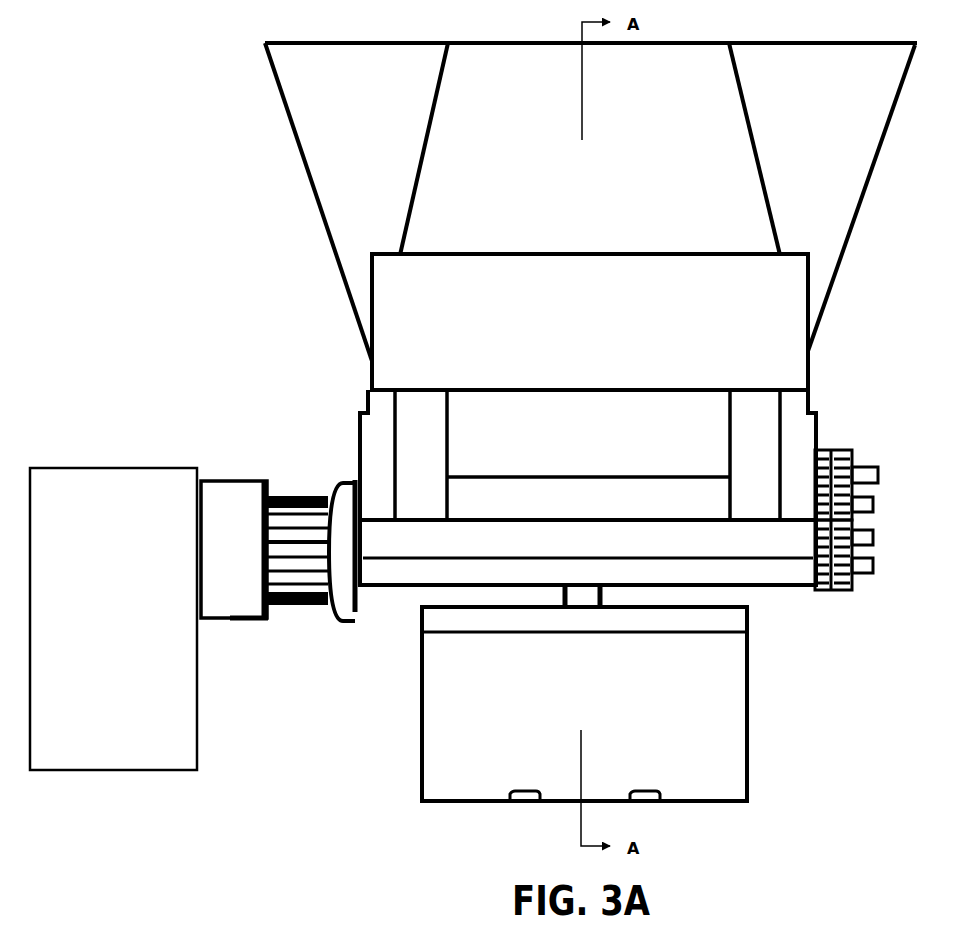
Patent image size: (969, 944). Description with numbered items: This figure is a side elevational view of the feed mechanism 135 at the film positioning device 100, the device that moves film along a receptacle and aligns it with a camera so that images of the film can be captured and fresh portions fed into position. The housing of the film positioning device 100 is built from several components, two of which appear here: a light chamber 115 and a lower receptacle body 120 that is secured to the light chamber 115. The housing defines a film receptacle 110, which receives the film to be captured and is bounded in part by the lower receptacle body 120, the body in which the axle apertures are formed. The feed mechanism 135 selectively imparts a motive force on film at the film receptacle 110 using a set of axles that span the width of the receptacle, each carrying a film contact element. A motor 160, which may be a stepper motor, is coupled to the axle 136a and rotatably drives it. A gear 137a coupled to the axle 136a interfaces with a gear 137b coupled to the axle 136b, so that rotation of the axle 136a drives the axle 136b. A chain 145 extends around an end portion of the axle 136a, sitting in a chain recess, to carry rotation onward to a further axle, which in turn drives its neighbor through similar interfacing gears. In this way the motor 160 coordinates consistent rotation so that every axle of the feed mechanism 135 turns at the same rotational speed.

The film positioning device 100 is at (110, 116).
The film receptacle 110 is at (576, 502).
The light chamber 115 is at (412, 760).
The lower receptacle body 120 is at (346, 429).
The feed mechanism 135 is at (210, 476).
The axle 136a is at (861, 585).
The axle 136b is at (861, 465).
The gear 137a is at (824, 592).
The gear 137b is at (833, 443).
The chain 145 is at (302, 608).
The motor 160 is at (84, 462).